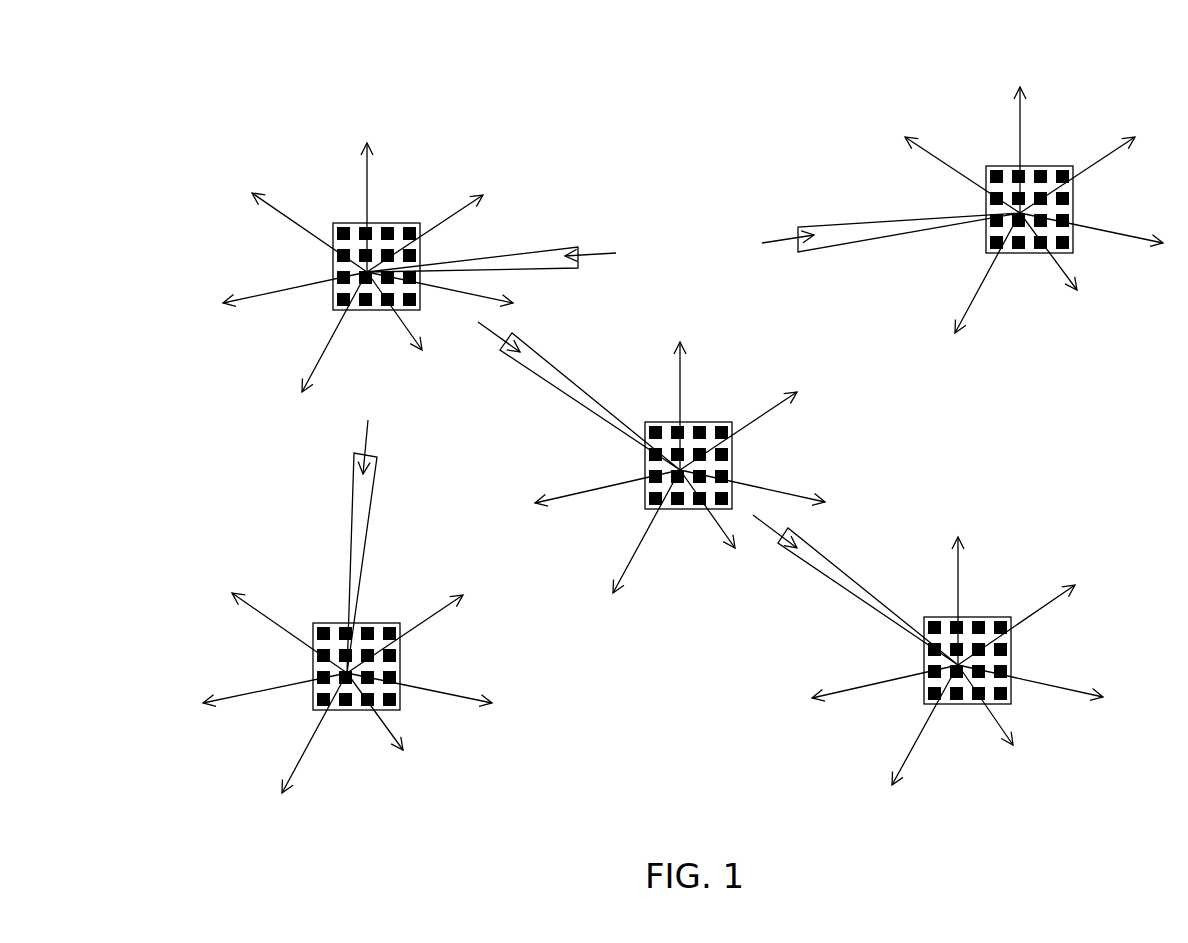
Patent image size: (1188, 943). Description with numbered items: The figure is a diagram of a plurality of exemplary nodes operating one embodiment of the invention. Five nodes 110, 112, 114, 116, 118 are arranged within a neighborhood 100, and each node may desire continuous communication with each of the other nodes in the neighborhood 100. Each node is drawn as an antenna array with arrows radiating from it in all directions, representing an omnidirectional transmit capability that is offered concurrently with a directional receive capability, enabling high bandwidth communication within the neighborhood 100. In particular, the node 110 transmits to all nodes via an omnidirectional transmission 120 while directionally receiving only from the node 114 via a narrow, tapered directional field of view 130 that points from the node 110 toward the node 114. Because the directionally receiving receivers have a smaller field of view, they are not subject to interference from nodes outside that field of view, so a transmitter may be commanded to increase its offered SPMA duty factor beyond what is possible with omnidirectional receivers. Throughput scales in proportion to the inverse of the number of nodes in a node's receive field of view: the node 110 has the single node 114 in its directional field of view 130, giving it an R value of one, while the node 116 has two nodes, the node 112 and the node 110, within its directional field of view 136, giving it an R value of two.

The neighborhood 100 is at (125, 142).
The node 110 is at (368, 267).
The node 112 is at (703, 422).
The node 114 is at (1043, 166).
The node 116 is at (982, 617).
The node 118 is at (372, 623).
The omnidirectional transmission 120 is at (328, 340).
The directional field of view 130 is at (530, 250).
The directional field of view 136 is at (847, 572).